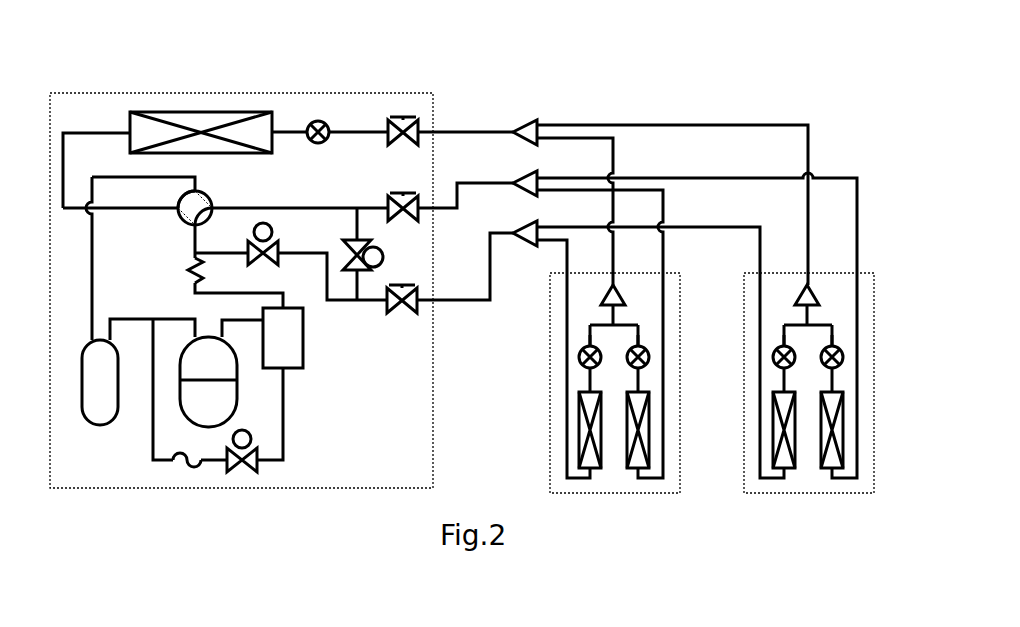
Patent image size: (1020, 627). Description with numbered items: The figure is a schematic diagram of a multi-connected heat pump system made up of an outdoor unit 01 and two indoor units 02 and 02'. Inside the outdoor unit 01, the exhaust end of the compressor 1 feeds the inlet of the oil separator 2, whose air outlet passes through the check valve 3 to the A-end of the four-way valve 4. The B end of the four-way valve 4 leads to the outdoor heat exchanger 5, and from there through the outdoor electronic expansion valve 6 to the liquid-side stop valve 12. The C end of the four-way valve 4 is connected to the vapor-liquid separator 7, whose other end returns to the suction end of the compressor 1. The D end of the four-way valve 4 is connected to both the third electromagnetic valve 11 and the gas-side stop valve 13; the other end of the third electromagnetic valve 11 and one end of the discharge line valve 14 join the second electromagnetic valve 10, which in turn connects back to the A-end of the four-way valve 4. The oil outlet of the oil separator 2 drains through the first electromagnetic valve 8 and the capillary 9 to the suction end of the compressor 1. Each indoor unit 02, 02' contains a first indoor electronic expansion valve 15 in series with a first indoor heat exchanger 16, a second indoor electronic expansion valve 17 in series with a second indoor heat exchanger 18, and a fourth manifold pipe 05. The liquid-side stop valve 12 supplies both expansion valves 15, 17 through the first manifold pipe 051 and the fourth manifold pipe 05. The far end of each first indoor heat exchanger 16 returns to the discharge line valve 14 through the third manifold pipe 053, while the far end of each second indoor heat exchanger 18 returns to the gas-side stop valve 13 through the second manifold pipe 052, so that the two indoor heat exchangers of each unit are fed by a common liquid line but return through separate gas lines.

The compressor 1 is at (215, 402).
The oil separator 2 is at (290, 350).
The check valve 3 is at (188, 276).
The four-way valve 4 is at (180, 212).
The outdoor heat exchanger 5 is at (232, 150).
The outdoor electronic expansion valve 6 is at (318, 144).
The vapor-liquid separator 7 is at (100, 412).
The first electromagnetic valve 8 is at (255, 468).
The capillary 9 is at (185, 466).
The second electromagnetic valve 10 is at (262, 262).
The third electromagnetic valve 11 is at (378, 248).
The liquid-side stop valve 12 is at (388, 142).
The gas-side stop valve 13 is at (418, 195).
The discharge line valve 14 is at (404, 313).
The first indoor electronic expansion valve 15 is at (580, 350).
The first indoor heat exchanger 16 is at (580, 400).
The second indoor electronic expansion valve 17 is at (646, 350).
The second indoor heat exchanger 18 is at (649, 410).
The outdoor unit 01 is at (352, 487).
The first indoor unit 02 is at (592, 383).
The second indoor unit 02' is at (787, 383).
The fourth manifold pipe 05 is at (622, 300).
The first manifold pipe 051 is at (522, 126).
The second manifold pipe 052 is at (522, 177).
The third manifold pipe 053 is at (522, 227).